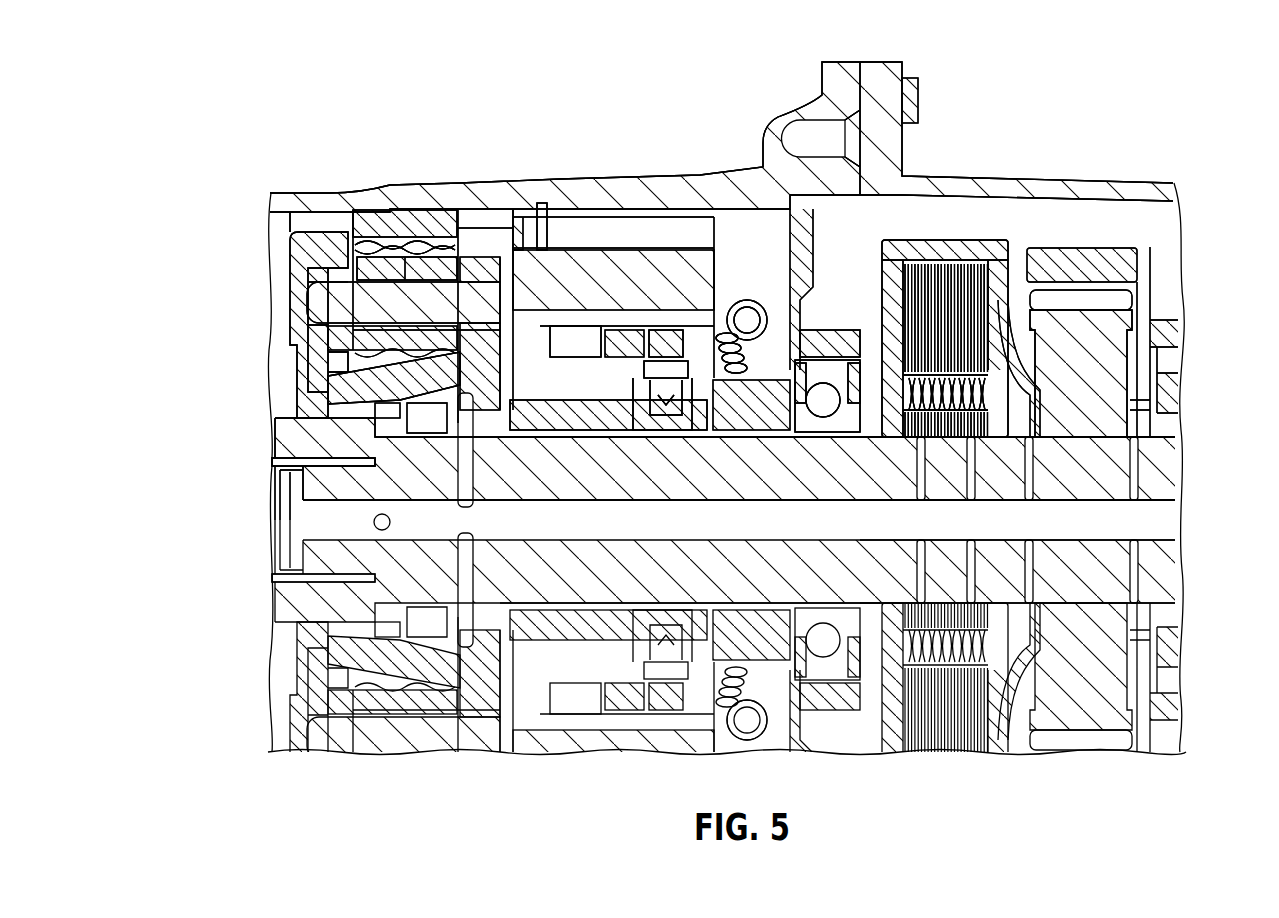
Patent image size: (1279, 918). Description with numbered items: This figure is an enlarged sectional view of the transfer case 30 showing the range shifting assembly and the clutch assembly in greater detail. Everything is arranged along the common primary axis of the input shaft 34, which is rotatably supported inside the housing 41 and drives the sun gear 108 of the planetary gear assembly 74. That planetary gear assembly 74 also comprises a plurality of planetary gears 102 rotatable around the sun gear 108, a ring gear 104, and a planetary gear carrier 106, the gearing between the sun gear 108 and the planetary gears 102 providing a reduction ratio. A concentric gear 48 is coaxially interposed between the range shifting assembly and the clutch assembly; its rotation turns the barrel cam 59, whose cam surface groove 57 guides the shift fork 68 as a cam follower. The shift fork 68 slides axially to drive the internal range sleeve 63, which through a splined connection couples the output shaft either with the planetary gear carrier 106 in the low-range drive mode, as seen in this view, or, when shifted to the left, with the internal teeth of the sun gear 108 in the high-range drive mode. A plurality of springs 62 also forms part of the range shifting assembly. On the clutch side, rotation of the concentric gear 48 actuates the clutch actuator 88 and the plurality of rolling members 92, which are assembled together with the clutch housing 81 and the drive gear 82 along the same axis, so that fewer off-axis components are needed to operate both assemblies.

The transfer case 30 is at (1141, 102).
The input shaft 34 is at (337, 530).
The housing 41 is at (1060, 183).
The concentric gear 48 is at (838, 328).
The cam surface groove 57 is at (650, 327).
The barrel cam 59 is at (742, 297).
The springs 62 is at (742, 742).
The internal range sleeve 63 is at (600, 422).
The shift fork 68 is at (697, 330).
The planetary gear assembly 74 is at (363, 228).
The clutch housing 81 is at (991, 242).
The drive gear 82 is at (1102, 300).
The clutch actuator 88 is at (858, 392).
The rolling members 92 is at (823, 405).
The planetary gears 102 is at (392, 262).
The ring gear 104 is at (430, 243).
The planetary gear carrier 106 is at (548, 253).
The sun gear 108 is at (340, 383).